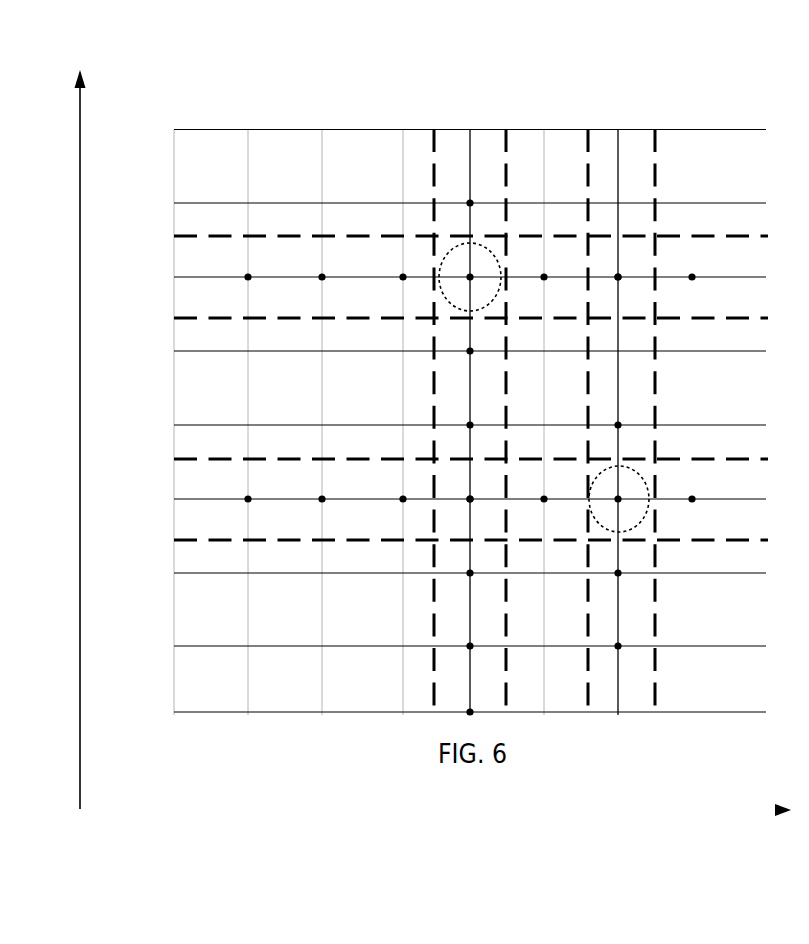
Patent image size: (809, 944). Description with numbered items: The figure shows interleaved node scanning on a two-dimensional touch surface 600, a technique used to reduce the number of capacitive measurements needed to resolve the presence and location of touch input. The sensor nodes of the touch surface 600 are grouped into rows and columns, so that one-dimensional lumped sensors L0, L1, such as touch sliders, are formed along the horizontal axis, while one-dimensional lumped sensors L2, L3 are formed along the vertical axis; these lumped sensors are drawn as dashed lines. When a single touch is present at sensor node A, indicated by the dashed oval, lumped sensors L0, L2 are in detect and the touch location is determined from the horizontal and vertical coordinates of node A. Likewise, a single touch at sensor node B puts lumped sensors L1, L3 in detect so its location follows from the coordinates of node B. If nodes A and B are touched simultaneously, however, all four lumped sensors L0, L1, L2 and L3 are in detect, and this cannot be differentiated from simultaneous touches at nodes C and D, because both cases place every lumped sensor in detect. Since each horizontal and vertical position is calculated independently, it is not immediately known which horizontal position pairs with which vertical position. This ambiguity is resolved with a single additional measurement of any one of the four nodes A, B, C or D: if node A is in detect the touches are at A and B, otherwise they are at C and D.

The 2D touch surface 600 is at (467, 44).
The 1D lumped sensor L0 is at (456, 277).
The 1D lumped sensor L1 is at (456, 499).
The 1D lumped sensor L2 is at (469, 410).
The 1D lumped sensor L3 is at (615, 409).
The sensor node A is at (470, 277).
The sensor node B is at (619, 499).
The sensor node C is at (623, 267).
The sensor node D is at (479, 491).